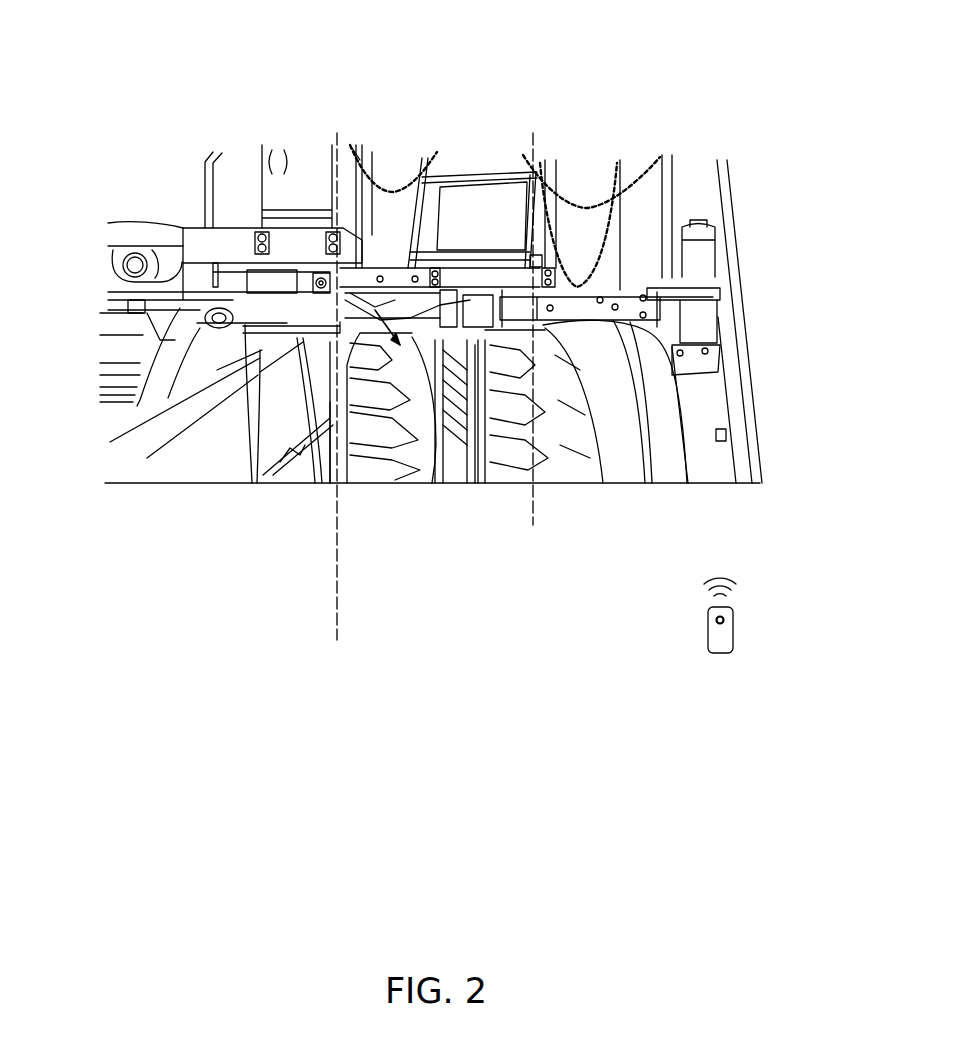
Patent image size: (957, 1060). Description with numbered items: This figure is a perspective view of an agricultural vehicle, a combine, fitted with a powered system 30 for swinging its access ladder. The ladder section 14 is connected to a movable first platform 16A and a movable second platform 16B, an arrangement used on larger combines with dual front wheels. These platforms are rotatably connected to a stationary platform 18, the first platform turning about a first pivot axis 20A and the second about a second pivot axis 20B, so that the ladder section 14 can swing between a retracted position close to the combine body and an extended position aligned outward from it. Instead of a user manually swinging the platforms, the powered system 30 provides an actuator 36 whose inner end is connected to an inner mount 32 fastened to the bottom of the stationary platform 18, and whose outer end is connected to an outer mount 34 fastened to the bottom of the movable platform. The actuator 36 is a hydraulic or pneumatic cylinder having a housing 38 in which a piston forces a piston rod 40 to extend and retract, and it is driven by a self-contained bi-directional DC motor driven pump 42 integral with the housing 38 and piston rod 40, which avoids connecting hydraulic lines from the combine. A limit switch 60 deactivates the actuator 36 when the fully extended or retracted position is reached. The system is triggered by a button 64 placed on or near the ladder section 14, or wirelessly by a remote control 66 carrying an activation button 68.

The ladder section 14 is at (710, 398).
The movable first platform 16A is at (460, 277).
The movable second platform 16B is at (583, 303).
The stationary platform 18 is at (238, 240).
The first pivot axis 20A is at (340, 140).
The second pivot axis 20B is at (535, 144).
The powered system 30 is at (148, 562).
The inner mount 32 is at (113, 283).
The outer mount 34 is at (572, 483).
The actuator 36 is at (390, 483).
The housing 38 is at (423, 483).
The piston rod 40 is at (517, 483).
The self-contained bi-directional DC motor driven pump 42 is at (252, 483).
The limit switch 60 is at (322, 483).
The button 64 is at (728, 442).
The remote control 66 is at (734, 610).
The activation button 68 is at (722, 620).